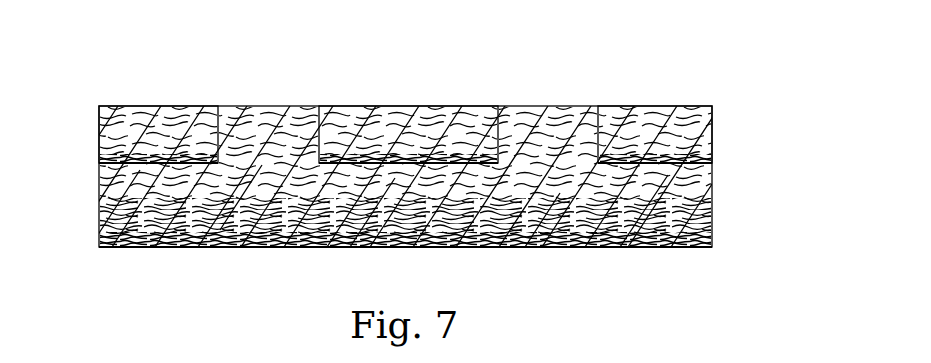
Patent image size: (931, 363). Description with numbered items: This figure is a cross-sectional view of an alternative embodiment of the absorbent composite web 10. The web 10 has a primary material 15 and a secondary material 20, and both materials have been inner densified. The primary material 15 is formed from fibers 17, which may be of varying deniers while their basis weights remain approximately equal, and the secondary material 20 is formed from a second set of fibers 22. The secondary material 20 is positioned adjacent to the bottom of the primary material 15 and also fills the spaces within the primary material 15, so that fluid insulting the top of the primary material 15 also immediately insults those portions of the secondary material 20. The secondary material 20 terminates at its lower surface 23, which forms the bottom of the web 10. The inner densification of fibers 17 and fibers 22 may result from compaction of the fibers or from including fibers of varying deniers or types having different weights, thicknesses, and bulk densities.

The web 10 is at (608, 63).
The primary material 15 is at (112, 122).
The fibers 17 is at (197, 110).
The secondary material 20 is at (108, 210).
The fibers 22 is at (262, 113).
The lower surface 23 is at (325, 250).